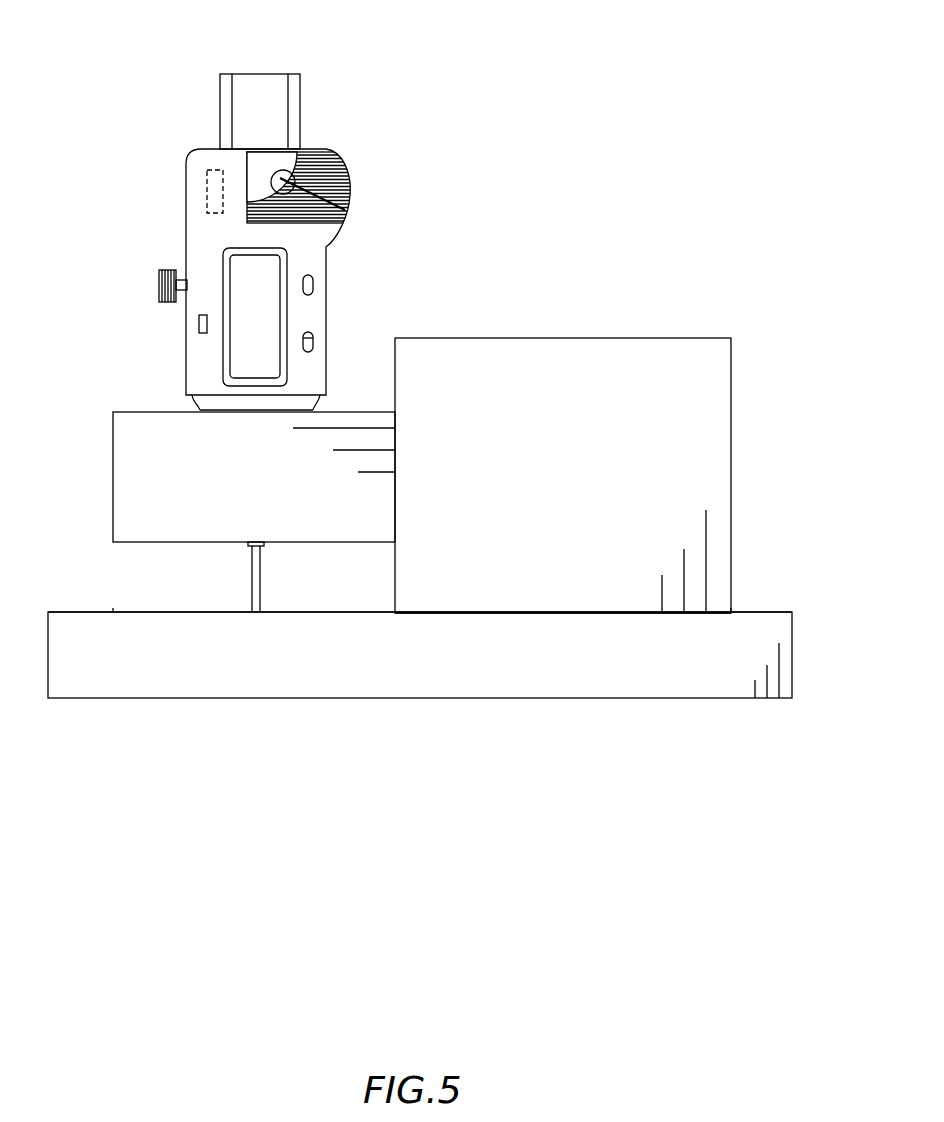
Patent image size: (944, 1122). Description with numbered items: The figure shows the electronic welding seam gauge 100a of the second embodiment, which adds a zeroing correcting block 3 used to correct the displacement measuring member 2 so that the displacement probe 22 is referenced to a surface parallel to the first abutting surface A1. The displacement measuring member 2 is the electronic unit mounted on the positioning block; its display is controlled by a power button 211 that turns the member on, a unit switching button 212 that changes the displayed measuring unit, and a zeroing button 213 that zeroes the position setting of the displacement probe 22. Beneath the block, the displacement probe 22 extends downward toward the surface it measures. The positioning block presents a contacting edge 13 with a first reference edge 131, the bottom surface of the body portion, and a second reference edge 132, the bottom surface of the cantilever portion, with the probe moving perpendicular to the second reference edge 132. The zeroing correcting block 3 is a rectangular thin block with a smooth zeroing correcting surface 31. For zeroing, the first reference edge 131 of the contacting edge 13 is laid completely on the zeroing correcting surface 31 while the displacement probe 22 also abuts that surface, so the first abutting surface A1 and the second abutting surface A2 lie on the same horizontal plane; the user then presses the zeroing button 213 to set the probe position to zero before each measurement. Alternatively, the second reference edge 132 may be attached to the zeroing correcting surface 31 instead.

The electronic welding seam gauge 100a is at (710, 78).
The displacement measuring member 2 is at (355, 118).
The power button 211 is at (313, 345).
The unit switching button 212 is at (199, 328).
The zeroing button 213 is at (313, 285).
The displacement probe 22 is at (255, 568).
The contacting edge 13 is at (731, 398).
The first reference edge 131 is at (580, 612).
The second reference edge 132 is at (313, 542).
The zeroing correcting block 3 is at (718, 690).
The zeroing correcting surface 31 is at (787, 612).
The first abutting surface A1 is at (752, 612).
The second abutting surface A2 is at (123, 612).